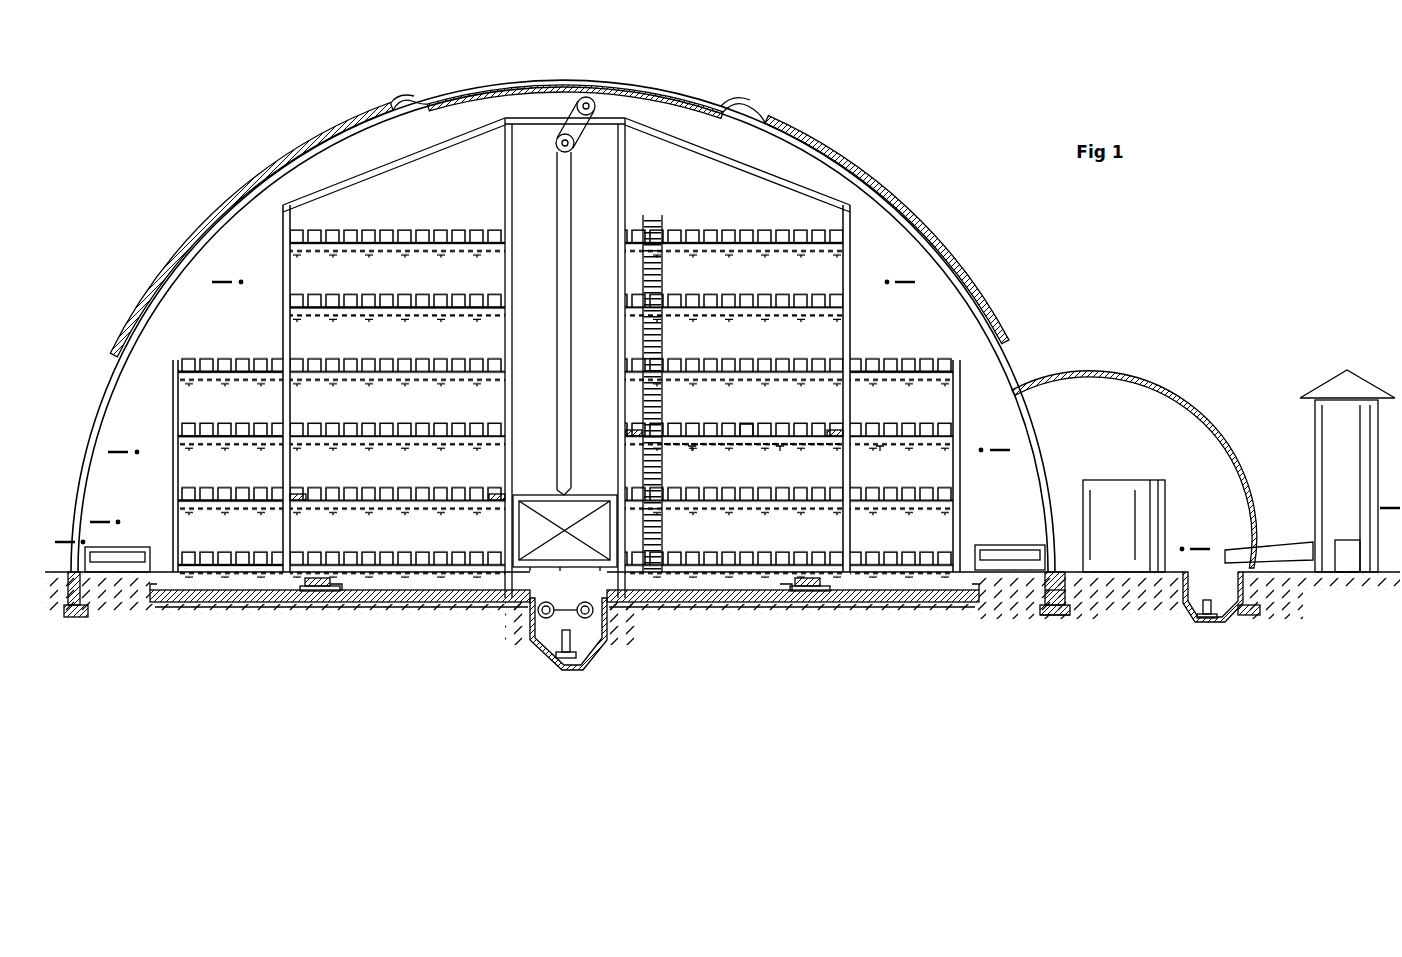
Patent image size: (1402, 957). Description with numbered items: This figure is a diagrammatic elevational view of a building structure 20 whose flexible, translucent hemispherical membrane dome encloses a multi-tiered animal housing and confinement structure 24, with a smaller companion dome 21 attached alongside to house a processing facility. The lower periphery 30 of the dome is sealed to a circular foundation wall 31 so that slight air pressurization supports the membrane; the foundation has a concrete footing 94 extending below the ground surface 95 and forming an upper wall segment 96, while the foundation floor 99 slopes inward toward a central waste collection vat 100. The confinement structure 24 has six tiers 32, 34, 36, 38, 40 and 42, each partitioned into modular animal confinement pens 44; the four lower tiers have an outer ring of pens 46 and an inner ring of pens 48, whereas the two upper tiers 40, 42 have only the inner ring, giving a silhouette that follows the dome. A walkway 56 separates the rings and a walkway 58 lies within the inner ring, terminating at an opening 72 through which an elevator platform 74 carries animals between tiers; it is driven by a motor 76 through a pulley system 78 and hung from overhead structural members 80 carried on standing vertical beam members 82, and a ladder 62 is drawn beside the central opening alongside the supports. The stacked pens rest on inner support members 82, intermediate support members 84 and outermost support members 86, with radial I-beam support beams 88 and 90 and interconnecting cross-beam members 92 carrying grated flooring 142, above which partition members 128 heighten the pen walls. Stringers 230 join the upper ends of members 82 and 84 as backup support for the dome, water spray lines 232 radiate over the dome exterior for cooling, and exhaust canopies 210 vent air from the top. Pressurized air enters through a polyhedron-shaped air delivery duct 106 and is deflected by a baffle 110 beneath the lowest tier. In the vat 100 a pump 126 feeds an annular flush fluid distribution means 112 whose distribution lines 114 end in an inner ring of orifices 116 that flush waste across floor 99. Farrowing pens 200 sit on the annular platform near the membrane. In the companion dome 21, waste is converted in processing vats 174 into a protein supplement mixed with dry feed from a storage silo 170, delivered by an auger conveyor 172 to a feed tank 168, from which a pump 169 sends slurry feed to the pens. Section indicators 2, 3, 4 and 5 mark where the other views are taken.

The building structure 20 is at (236, 84).
The companion dome 21 is at (1148, 398).
The animal housing and confinement structure 24 is at (536, 114).
The lower periphery 30 is at (74, 588).
The circular foundation wall 31 is at (78, 618).
The first tier 32 is at (203, 558).
The second tier 34 is at (203, 495).
The third tier 36 is at (203, 430).
The fourth tier 38 is at (210, 356).
The upper tier 40 is at (300, 298).
The uppermost tier 42 is at (298, 238).
The animal confinement pens 44 is at (395, 281).
The outer ring of pens 46 is at (911, 340).
The inner ring of pens 48 is at (736, 214).
The walkway 56 is at (840, 425).
The inner walkway 58 is at (628, 432).
The ladder 62 is at (651, 230).
The opening 72 is at (525, 332).
The elevator platform 74 is at (550, 521).
The motor 76 is at (598, 106).
The pulley system 78 is at (575, 210).
The overhead structural members 80 is at (552, 130).
The inner upstanding support members 82 is at (506, 195).
The intermediate support members 84 is at (284, 326).
The outermost support members 86 is at (180, 385).
The radial support beams 88 is at (692, 446).
The I-beam members 90 is at (881, 446).
The cross-beam members 92 is at (781, 446).
The concrete footing 94 is at (1072, 610).
The ground surface 95 is at (1345, 544).
The upper wall segment 96 is at (1066, 594).
The foundation floor 99 is at (472, 592).
The central waste collection vat 100 is at (533, 632).
The air delivery duct 106 is at (318, 600).
The deflecting baffle 110 is at (312, 566).
The annular flush fluid distribution means 112 is at (556, 604).
The distribution lines 114 is at (215, 604).
The inner ring of orifices 116 is at (345, 590).
The pump 126 is at (588, 648).
The partition member 128 is at (745, 424).
The grated flooring 142 is at (708, 448).
The feed tank 168 is at (1180, 595).
The pump 169 is at (1210, 626).
The storage silo 170 is at (1316, 414).
The auger conveyor 172 is at (1270, 548).
The processing vats 174 is at (1110, 495).
The farrowing pens 200 is at (1008, 548).
The exhaust canopies 210 is at (396, 108).
The stringers 230 is at (410, 160).
The water spray lines 232 is at (268, 185).
The section line 2 is at (65, 536).
The section line 3 is at (100, 516).
The section line 4 is at (118, 446).
The section line 5 is at (222, 276).